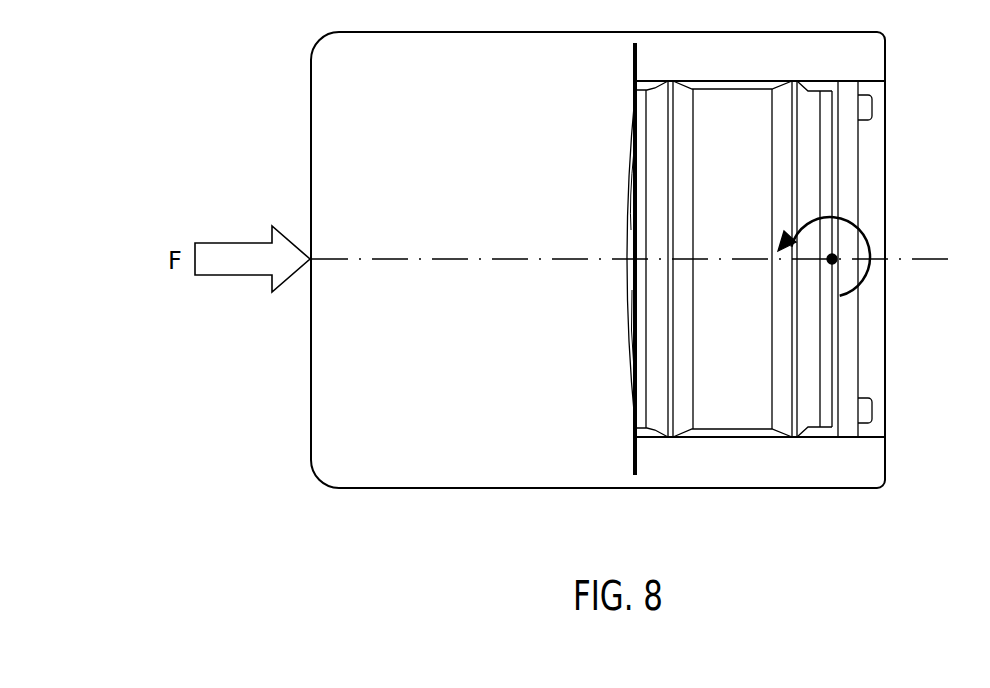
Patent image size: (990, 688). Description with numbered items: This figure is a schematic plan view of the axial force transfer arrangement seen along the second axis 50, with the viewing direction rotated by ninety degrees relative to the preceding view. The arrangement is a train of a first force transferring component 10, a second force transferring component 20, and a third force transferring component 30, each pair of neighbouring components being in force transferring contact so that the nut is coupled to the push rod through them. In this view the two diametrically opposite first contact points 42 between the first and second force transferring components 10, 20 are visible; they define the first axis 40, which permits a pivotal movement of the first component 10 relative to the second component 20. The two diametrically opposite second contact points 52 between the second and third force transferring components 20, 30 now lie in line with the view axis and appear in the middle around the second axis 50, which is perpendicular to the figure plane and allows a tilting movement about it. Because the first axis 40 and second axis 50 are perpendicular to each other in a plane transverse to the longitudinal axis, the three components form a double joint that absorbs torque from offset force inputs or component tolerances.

The first force transferring component 10 is at (463, 145).
The second force transferring component 20 is at (737, 371).
The third force transferring component 30 is at (850, 160).
The first axis 40 is at (633, 460).
The first contact points 42 is at (633, 105).
The second axis 50 is at (837, 254).
The second contact points 52 is at (838, 273).